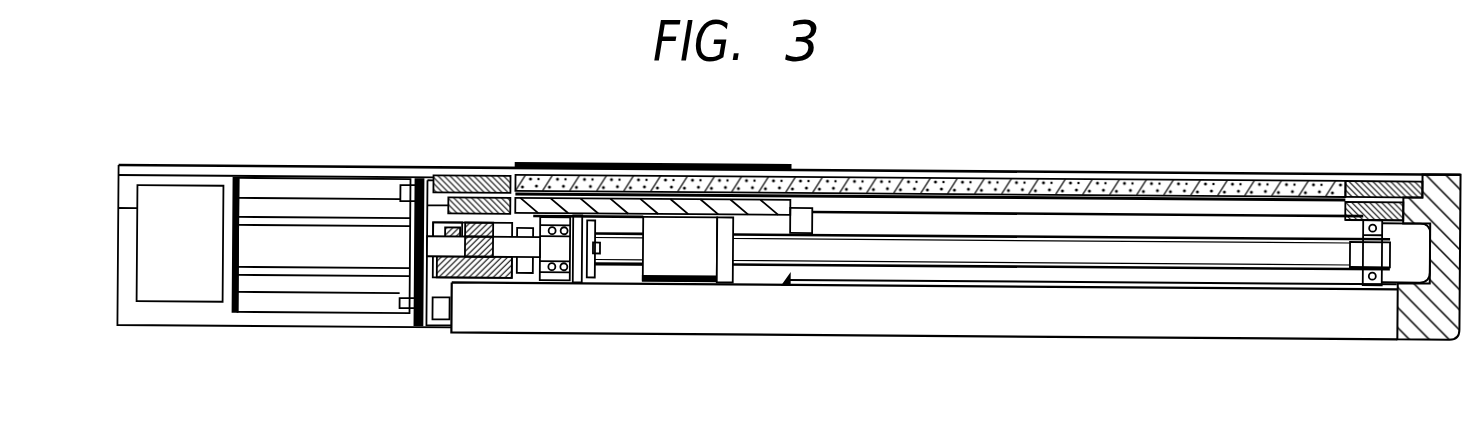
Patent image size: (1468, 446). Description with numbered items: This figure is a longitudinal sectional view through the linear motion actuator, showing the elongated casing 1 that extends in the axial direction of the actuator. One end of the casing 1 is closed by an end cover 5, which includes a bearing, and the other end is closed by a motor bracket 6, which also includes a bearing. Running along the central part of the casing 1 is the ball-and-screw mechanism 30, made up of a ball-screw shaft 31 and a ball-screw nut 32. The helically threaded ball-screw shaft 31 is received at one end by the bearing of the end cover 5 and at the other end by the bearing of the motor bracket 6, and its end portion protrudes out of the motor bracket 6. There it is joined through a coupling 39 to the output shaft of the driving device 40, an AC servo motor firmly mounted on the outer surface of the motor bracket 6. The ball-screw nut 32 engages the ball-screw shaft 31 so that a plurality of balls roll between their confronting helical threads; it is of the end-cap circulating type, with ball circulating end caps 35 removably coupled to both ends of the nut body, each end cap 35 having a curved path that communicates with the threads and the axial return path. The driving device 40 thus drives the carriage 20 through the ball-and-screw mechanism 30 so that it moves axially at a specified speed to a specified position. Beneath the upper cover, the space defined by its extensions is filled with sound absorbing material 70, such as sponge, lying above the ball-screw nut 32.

The casing 1 is at (1097, 338).
The end cover 5 is at (1435, 305).
The motor bracket 6 is at (312, 319).
The carriage 20 is at (698, 196).
The ball-and-screw mechanism 30 is at (786, 273).
The ball-screw shaft 31 is at (1068, 238).
The ball-screw nut 32 is at (692, 258).
The end cap 35 is at (723, 268).
The coupling 39 is at (495, 272).
The driving device 40 is at (208, 287).
The sound absorbing material 70 is at (888, 171).